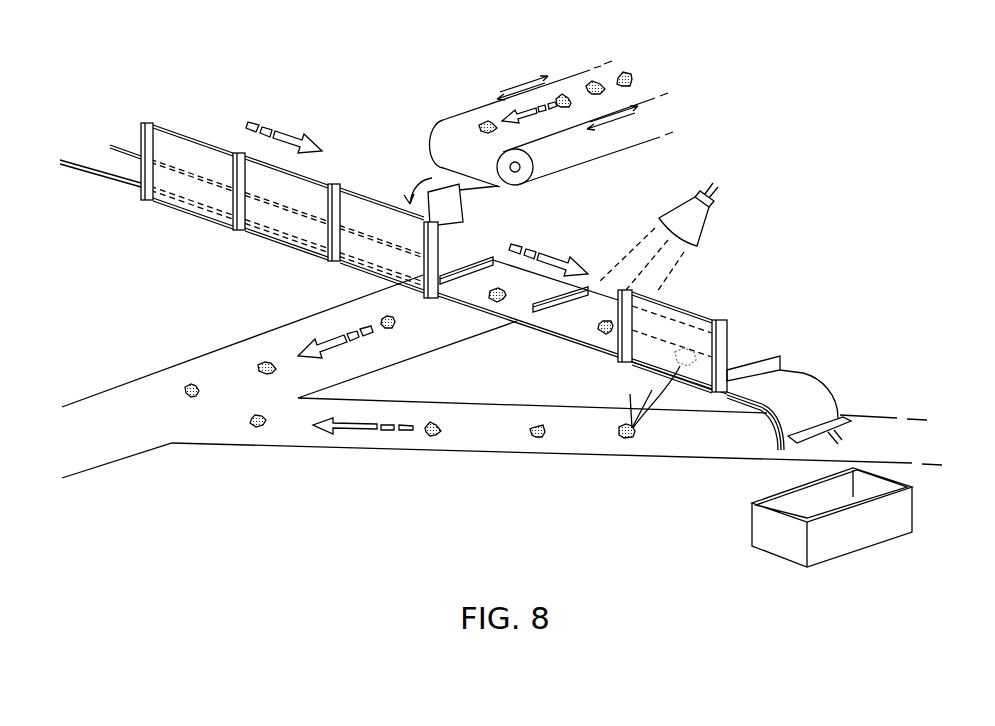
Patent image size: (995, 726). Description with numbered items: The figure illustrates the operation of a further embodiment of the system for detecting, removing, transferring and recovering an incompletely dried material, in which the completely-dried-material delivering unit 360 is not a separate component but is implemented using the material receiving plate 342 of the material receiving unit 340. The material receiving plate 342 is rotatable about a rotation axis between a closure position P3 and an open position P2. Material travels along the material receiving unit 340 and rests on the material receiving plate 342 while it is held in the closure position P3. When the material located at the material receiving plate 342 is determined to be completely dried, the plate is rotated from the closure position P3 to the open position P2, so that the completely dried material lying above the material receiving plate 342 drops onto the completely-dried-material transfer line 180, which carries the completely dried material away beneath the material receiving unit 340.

The material receiving unit 340 is at (485, 261).
The material receiving plate 342 is at (697, 331).
The completely-dried-material delivering unit 360 is at (658, 239).
The completely-dried-material transfer line 180 is at (672, 437).
The open position P2 is at (742, 331).
The closure position P3 is at (738, 327).